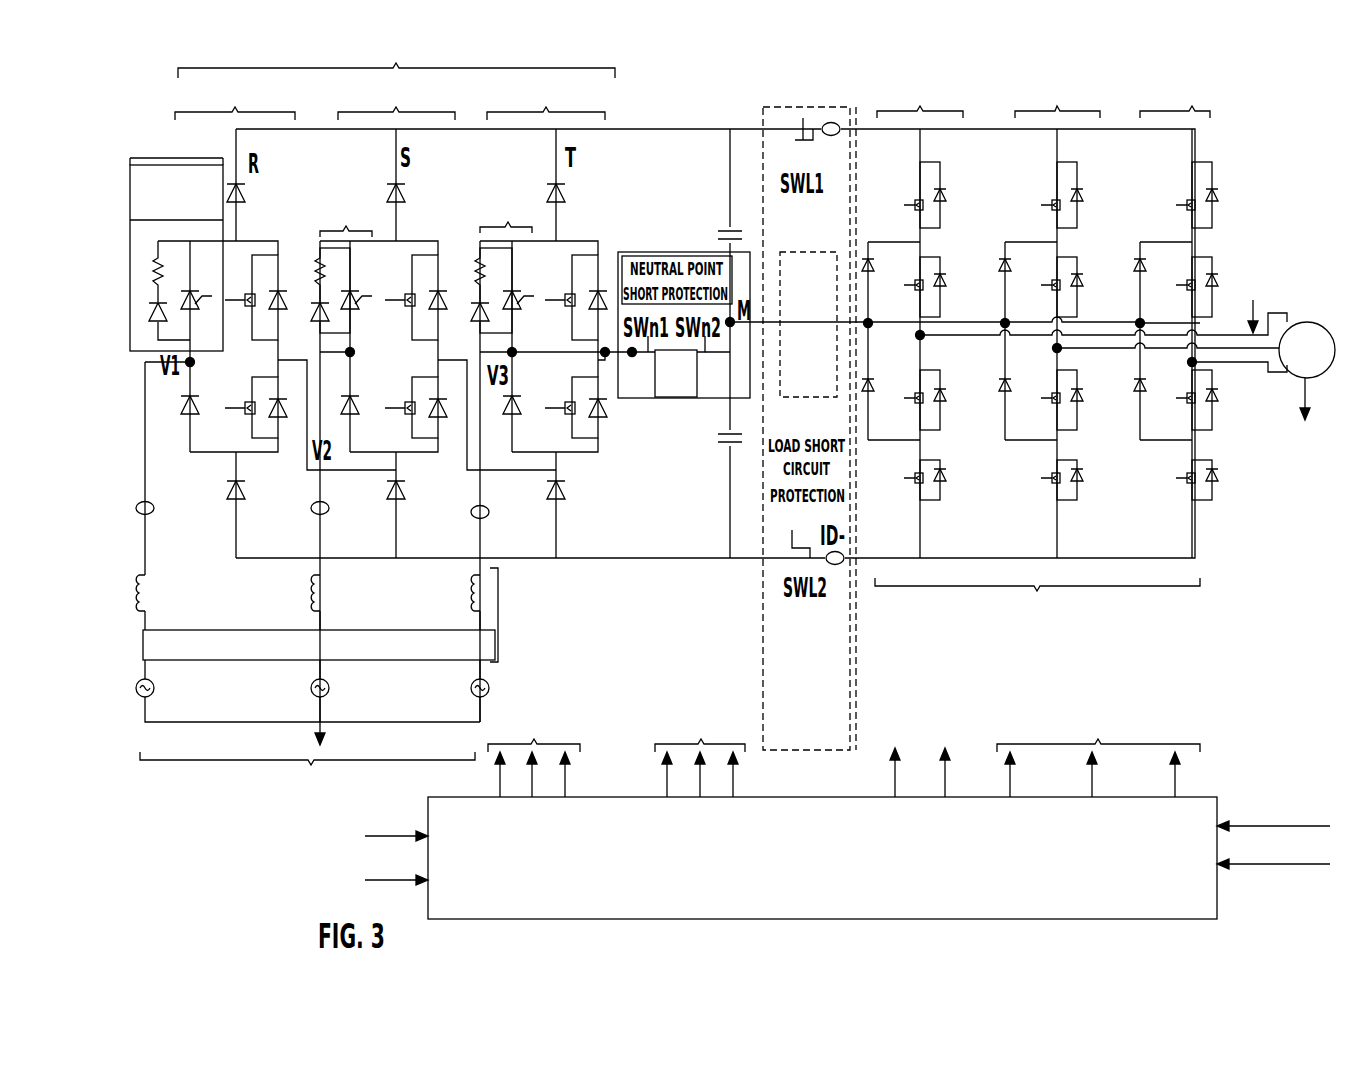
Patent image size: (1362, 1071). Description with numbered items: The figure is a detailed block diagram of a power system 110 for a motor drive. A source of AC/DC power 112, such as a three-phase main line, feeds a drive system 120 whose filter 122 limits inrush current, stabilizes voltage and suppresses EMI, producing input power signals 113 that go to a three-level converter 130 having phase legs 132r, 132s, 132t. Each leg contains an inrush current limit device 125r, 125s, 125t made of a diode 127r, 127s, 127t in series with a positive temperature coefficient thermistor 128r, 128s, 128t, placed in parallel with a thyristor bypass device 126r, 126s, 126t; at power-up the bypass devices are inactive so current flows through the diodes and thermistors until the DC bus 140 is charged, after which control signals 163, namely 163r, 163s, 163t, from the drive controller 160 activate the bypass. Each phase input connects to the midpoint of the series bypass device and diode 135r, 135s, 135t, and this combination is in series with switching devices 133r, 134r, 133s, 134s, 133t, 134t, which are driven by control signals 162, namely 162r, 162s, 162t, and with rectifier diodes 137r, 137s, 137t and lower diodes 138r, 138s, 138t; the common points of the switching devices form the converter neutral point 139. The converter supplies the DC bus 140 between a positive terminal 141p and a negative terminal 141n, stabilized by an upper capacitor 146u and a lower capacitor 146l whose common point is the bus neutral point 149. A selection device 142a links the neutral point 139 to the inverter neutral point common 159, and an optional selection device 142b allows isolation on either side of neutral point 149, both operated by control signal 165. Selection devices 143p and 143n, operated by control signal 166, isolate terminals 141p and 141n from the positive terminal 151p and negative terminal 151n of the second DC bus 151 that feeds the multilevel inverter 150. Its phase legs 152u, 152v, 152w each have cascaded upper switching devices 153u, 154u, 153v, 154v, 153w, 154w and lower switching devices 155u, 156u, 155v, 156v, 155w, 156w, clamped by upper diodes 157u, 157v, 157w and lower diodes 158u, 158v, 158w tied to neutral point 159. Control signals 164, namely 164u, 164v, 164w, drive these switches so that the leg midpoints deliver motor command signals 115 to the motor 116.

The power system 110 is at (1275, 100).
The source of AC/DC power 112 is at (307, 775).
The input power signals 113 is at (482, 535).
The motor command signals 115 is at (1253, 298).
The motor 116 is at (1302, 322).
The drive system 120 is at (1228, 662).
The filter 122 is at (498, 598).
The inrush current limit device 125r is at (159, 249).
The inrush current limit device 125s is at (347, 214).
The inrush current limit device 125t is at (506, 208).
The bypass device 126r is at (194, 288).
The bypass device 126s is at (354, 290).
The bypass device 126t is at (516, 290).
The diode 127r is at (155, 345).
The diode 127s is at (315, 316).
The diode 127t is at (476, 318).
The positive temperature coefficient thermistor 128r is at (169, 271).
The positive temperature coefficient thermistor 128s is at (316, 270).
The positive temperature coefficient thermistor 128t is at (476, 268).
The converter 130 is at (396, 56).
The phase leg R 132r is at (235, 99).
The phase leg S 132s is at (396, 99).
The phase leg T 132t is at (546, 99).
The switching device 133r is at (255, 296).
The switching device 133s is at (416, 296).
The switching device 133t is at (578, 296).
The switching device 134r is at (255, 440).
The switching device 134s is at (416, 440).
The switching device 134t is at (580, 420).
The diode 135r is at (180, 405).
The diode 135s is at (360, 405).
The diode 135t is at (540, 410).
The rectifier 137r is at (247, 190).
The rectifier 137s is at (405, 188).
The rectifier 137t is at (567, 188).
The diode 138r is at (225, 495).
The diode 138s is at (385, 495).
The diode 138t is at (567, 500).
The neutral point 139 is at (600, 354).
The DC bus 140 is at (728, 70).
The positive terminal 141p is at (737, 128).
The negative terminal 141n is at (733, 562).
The selection device 142a is at (671, 375).
The selection device 142b is at (808, 324).
The selection device 143p is at (835, 120).
The selection device 143n is at (800, 565).
The upper capacitor 146u is at (712, 223).
The lower capacitor 146l is at (707, 451).
The neutral point 149 is at (736, 330).
The inverter 150 is at (1037, 603).
The second DC bus 151 is at (983, 108).
The positive terminal 151p is at (1005, 127).
The negative terminal 151n is at (987, 586).
The phase leg U 152u is at (934, 315).
The phase leg V 152v is at (1073, 315).
The phase leg W 152w is at (1204, 315).
The switching device 153u is at (925, 200).
The switching device 153v is at (1062, 200).
The switching device 153w is at (1197, 200).
The switching device 154u is at (925, 282).
The switching device 154v is at (1062, 282).
The switching device 154w is at (1197, 282).
The switching device 155u is at (927, 410).
The switching device 155v is at (1064, 410).
The switching device 155w is at (1199, 410).
The switching device 156u is at (927, 492).
The switching device 156v is at (1064, 492).
The switching device 156w is at (1199, 492).
The upper diode 157u is at (868, 257).
The upper diode 157v is at (1005, 257).
The upper diode 157w is at (1140, 257).
The lower diode 158u is at (872, 392).
The lower diode 158v is at (1009, 392).
The lower diode 158w is at (1144, 392).
The neutral point common 159 is at (872, 326).
The drive controller 160 is at (831, 858).
The control signals 162 is at (521, 768).
The control signal 162r is at (500, 770).
The control signal 162s is at (532, 770).
The control signal 162t is at (565, 770).
The control signals 163 is at (703, 768).
The control signal 163r is at (667, 770).
The control signal 163s is at (700, 770).
The control signal 163t is at (733, 770).
The control signals 164 is at (1110, 752).
The control signal 164u is at (1032, 775).
The control signal 164v is at (1114, 775).
The control signal 164w is at (1197, 775).
The control signal 165 is at (891, 757).
The control signal 166 is at (944, 757).